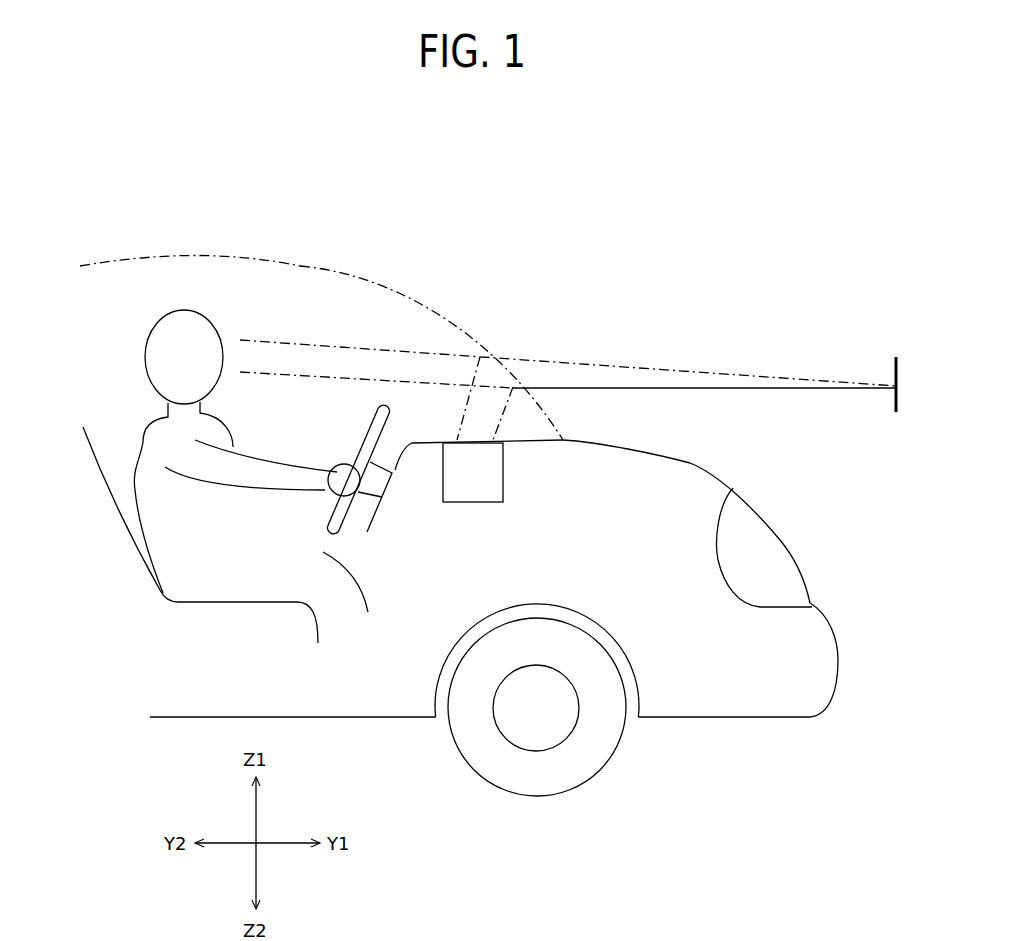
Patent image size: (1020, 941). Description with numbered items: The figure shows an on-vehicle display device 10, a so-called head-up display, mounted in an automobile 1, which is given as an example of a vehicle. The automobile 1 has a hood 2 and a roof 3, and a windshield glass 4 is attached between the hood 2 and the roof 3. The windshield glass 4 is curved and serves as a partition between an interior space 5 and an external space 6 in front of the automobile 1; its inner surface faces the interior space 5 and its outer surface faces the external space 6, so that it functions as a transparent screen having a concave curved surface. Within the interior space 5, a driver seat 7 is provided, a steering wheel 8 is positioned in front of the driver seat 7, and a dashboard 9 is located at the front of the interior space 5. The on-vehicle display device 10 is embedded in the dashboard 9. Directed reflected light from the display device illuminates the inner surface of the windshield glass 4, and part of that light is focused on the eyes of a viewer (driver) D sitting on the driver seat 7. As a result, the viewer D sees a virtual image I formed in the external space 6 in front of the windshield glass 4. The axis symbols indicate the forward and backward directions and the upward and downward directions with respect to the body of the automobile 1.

The automobile 1 is at (140, 255).
The hood 2 is at (707, 477).
The roof 3 is at (203, 258).
The windshield glass 4 is at (447, 320).
The interior space 5 is at (288, 294).
The external space 6 is at (645, 310).
The driver seat 7 is at (110, 535).
The steering wheel 8 is at (368, 442).
The dashboard 9 is at (422, 438).
The on-vehicle display device 10 is at (507, 478).
The viewer (driver) D is at (147, 436).
The virtual image I is at (893, 372).